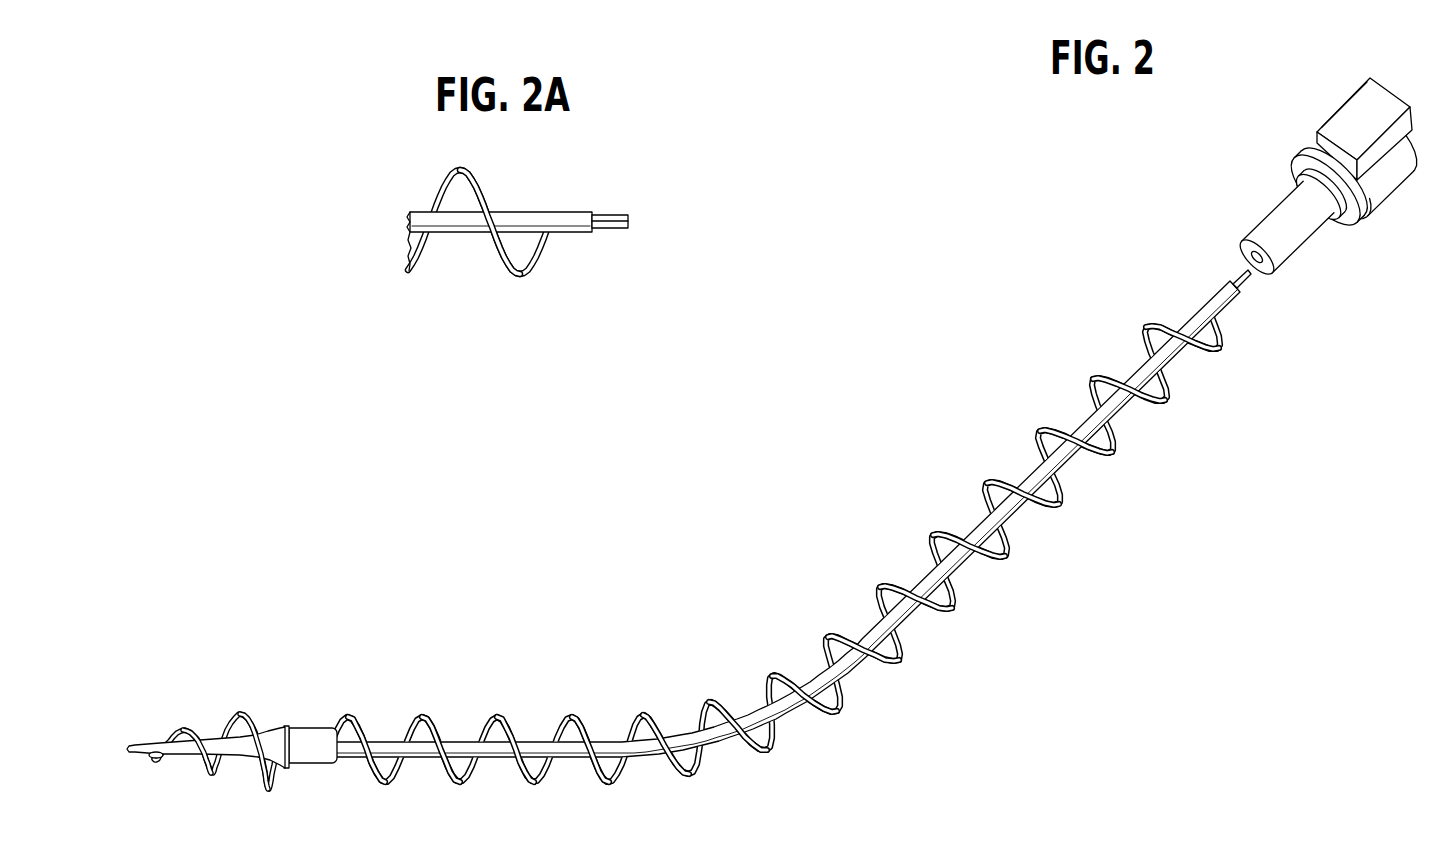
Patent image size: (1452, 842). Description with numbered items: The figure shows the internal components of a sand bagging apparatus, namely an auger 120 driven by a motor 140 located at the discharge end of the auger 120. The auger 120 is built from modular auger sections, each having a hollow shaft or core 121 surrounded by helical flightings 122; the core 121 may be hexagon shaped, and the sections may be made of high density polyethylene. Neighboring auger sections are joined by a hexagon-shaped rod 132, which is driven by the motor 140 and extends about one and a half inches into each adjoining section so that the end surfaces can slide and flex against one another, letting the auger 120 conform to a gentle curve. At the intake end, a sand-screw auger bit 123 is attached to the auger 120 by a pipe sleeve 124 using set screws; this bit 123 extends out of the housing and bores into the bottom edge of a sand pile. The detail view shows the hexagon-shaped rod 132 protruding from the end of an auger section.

In FIG. 2, the auger 120 is at (869, 561).
In FIG. 2, the core 121 is at (608, 745).
In FIG. 2, the flightings 122 is at (785, 662).
In FIG. 2, the sand-screw auger bit 123 is at (207, 731).
In FIG. 2, the pipe sleeve 124 is at (308, 717).
In FIG. 2, the hexagon-shaped rod 132 is at (1222, 269).
In FIG. 2A, the hexagon-shaped rod 132 is at (614, 184).
In FIG. 2, the motor 140 is at (1294, 134).